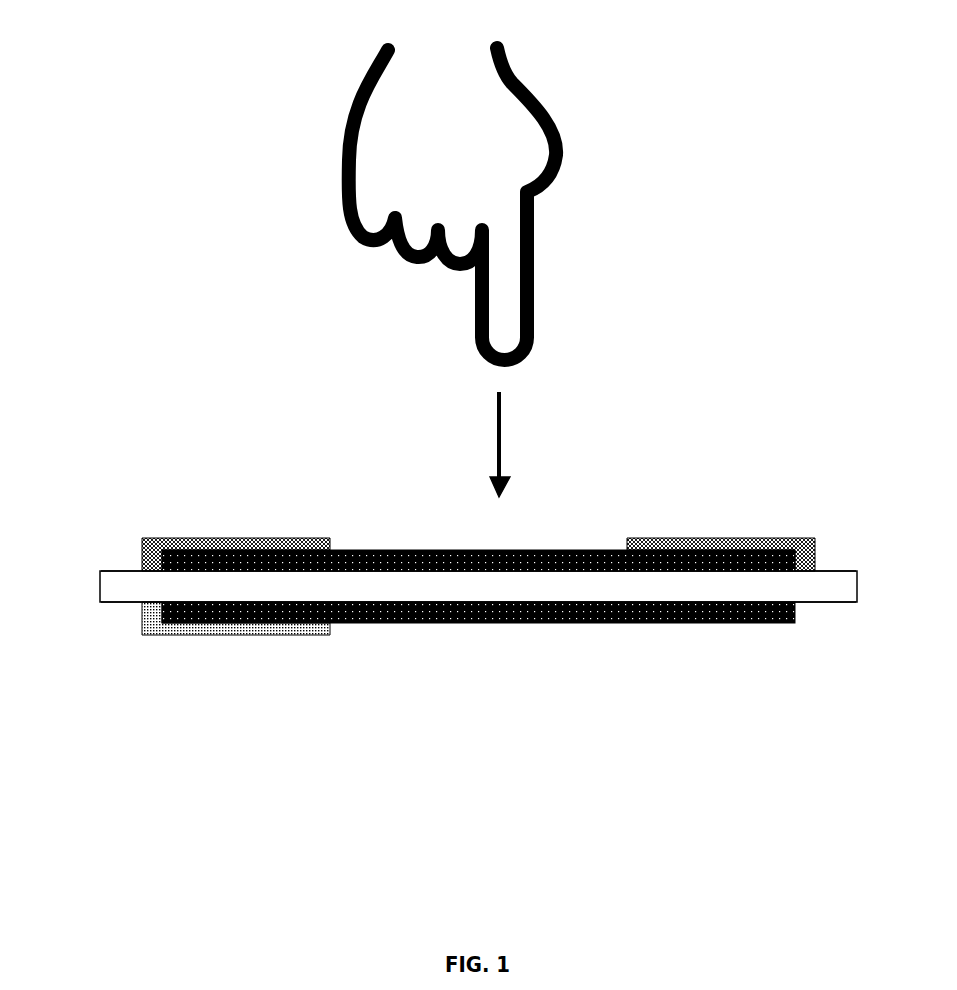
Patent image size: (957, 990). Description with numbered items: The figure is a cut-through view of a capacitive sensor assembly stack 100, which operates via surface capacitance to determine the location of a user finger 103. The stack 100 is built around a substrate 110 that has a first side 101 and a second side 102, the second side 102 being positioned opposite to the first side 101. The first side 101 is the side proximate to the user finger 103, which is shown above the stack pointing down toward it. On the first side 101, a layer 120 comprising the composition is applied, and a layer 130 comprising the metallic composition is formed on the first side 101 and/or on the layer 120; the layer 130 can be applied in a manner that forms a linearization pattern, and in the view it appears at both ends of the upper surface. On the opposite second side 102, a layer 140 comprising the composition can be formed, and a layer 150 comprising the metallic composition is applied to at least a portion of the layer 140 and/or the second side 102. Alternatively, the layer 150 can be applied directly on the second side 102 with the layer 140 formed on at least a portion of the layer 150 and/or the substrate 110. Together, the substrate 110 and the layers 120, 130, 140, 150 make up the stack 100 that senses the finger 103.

The capacitive sensor assembly stack 100 is at (465, 630).
The first side 101 is at (118, 571).
The second side 102 is at (118, 602).
The user finger 103 is at (535, 293).
The substrate 110 is at (497, 600).
The layer 120 is at (573, 549).
The layer 130 is at (140, 556).
The layer 140 is at (515, 624).
The layer 150 is at (221, 634).